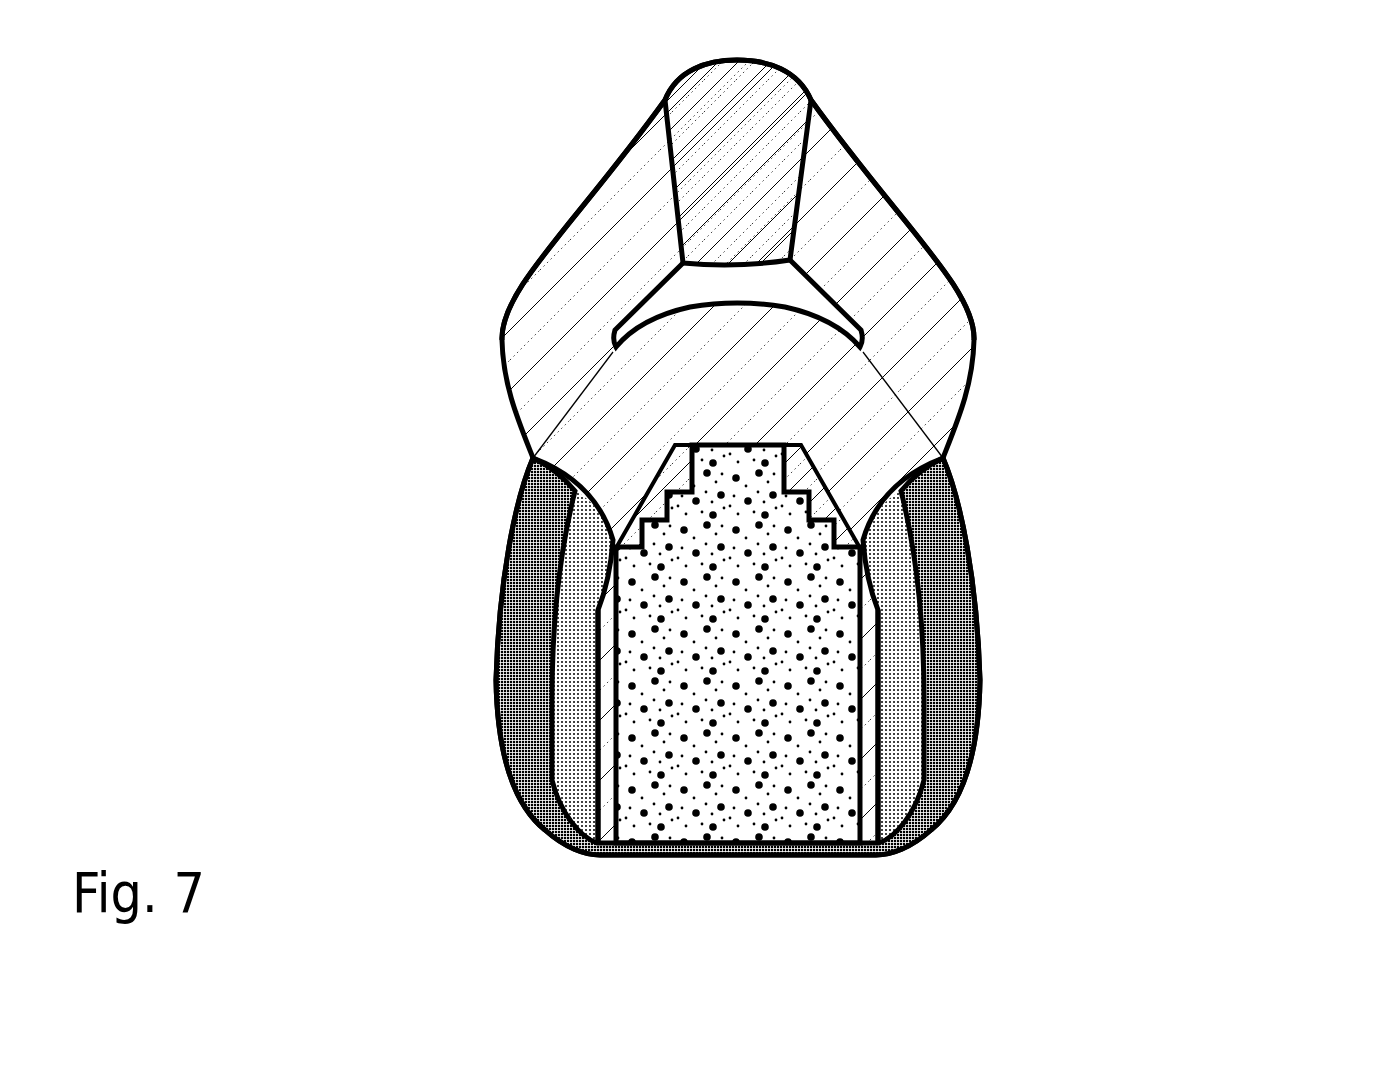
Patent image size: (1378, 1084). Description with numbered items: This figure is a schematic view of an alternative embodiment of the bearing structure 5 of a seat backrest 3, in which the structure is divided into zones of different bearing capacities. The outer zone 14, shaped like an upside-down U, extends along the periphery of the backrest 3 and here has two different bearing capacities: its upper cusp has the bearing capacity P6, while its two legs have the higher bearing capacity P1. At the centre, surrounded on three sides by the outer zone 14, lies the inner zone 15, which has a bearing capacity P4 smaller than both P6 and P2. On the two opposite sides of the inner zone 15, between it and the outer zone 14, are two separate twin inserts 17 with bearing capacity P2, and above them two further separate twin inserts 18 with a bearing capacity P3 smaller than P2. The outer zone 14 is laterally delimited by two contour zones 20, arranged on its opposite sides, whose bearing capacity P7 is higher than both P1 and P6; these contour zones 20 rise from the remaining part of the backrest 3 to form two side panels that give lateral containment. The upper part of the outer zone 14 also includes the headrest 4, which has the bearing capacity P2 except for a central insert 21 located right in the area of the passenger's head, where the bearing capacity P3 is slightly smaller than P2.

The backrest 3 is at (318, 542).
The headrest 4 is at (534, 139).
The bearing structure 5 is at (1244, 836).
The outer zone 14 is at (615, 263).
The inner zone 15 is at (757, 763).
The twin inserts 17 is at (607, 752).
The twin inserts 18 is at (640, 505).
The contour zones 20 is at (523, 692).
The central insert 21 is at (762, 133).